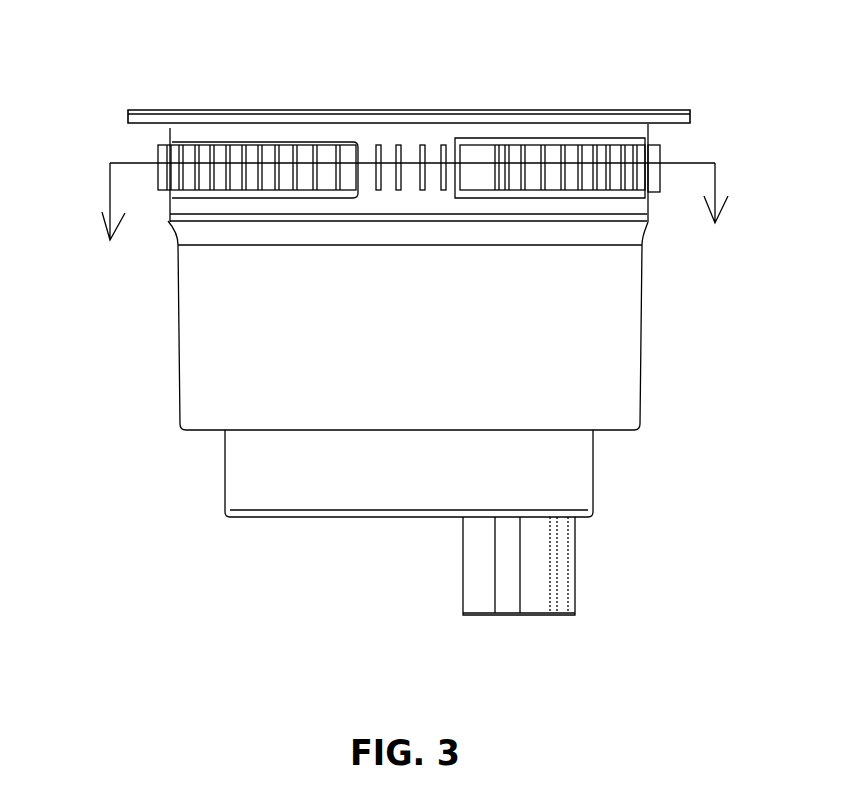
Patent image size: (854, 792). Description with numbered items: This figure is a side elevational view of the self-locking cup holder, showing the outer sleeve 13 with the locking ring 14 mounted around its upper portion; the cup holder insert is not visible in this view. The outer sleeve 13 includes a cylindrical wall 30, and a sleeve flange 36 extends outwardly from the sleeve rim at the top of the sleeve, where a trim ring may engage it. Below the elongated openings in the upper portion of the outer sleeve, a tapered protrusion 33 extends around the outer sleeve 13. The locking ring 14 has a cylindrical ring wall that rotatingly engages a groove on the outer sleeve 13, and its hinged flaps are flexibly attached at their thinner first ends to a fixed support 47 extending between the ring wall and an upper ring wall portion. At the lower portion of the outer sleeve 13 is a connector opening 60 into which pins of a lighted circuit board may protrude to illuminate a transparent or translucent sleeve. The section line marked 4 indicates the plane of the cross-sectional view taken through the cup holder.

The section line 4- 4 is at (411, 226).
The outer sleeve 13 is at (410, 369).
The locking ring 14 is at (170, 140).
The cylindrical wall 30 is at (184, 368).
The tapered protrusion 33 is at (483, 233).
The sleeve flange 36 is at (680, 112).
The fixed support 47 is at (388, 148).
The connector opening 60 is at (556, 583).